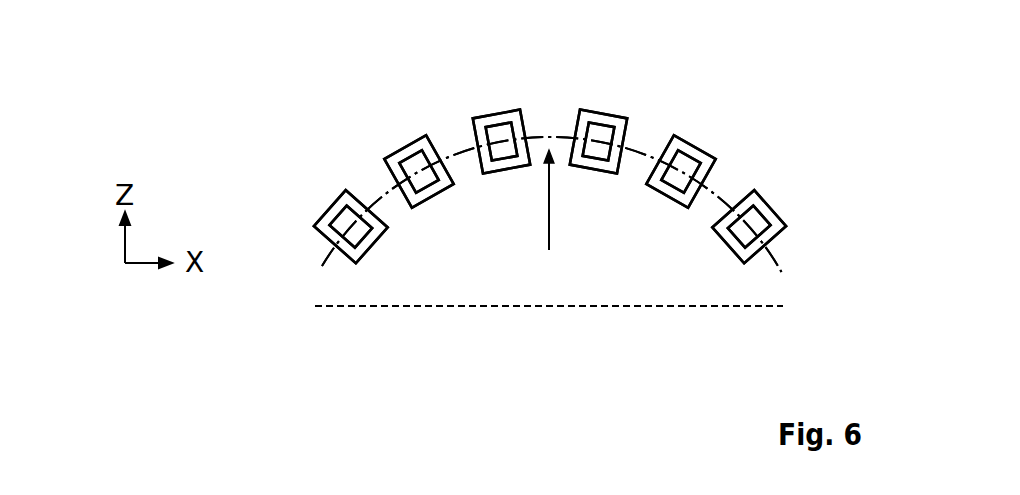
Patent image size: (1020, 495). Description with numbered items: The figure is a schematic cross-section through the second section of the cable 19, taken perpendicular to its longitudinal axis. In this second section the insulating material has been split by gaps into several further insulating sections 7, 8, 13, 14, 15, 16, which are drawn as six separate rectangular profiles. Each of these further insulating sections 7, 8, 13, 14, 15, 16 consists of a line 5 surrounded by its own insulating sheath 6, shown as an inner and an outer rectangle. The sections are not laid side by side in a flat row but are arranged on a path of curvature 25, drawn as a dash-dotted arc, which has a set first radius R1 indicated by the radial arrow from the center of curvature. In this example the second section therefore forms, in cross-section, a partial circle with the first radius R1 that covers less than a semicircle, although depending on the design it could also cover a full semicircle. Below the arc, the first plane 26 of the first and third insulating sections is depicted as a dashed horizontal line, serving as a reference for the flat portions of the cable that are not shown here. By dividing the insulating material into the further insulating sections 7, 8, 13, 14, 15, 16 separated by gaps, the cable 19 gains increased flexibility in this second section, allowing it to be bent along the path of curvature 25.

The line 5 is at (342, 207).
The insulating sheath 6 is at (328, 228).
The further insulating section 7 is at (317, 181).
The further insulating section 8 is at (422, 120).
The further insulating section 13 is at (508, 96).
The further insulating section 14 is at (624, 105).
The further insulating section 15 is at (725, 153).
The further insulating section 16 is at (810, 211).
The cable 19 is at (266, 285).
The path of curvature 25 is at (320, 262).
The first plane 26 is at (713, 307).
The first radius R1 is at (566, 211).